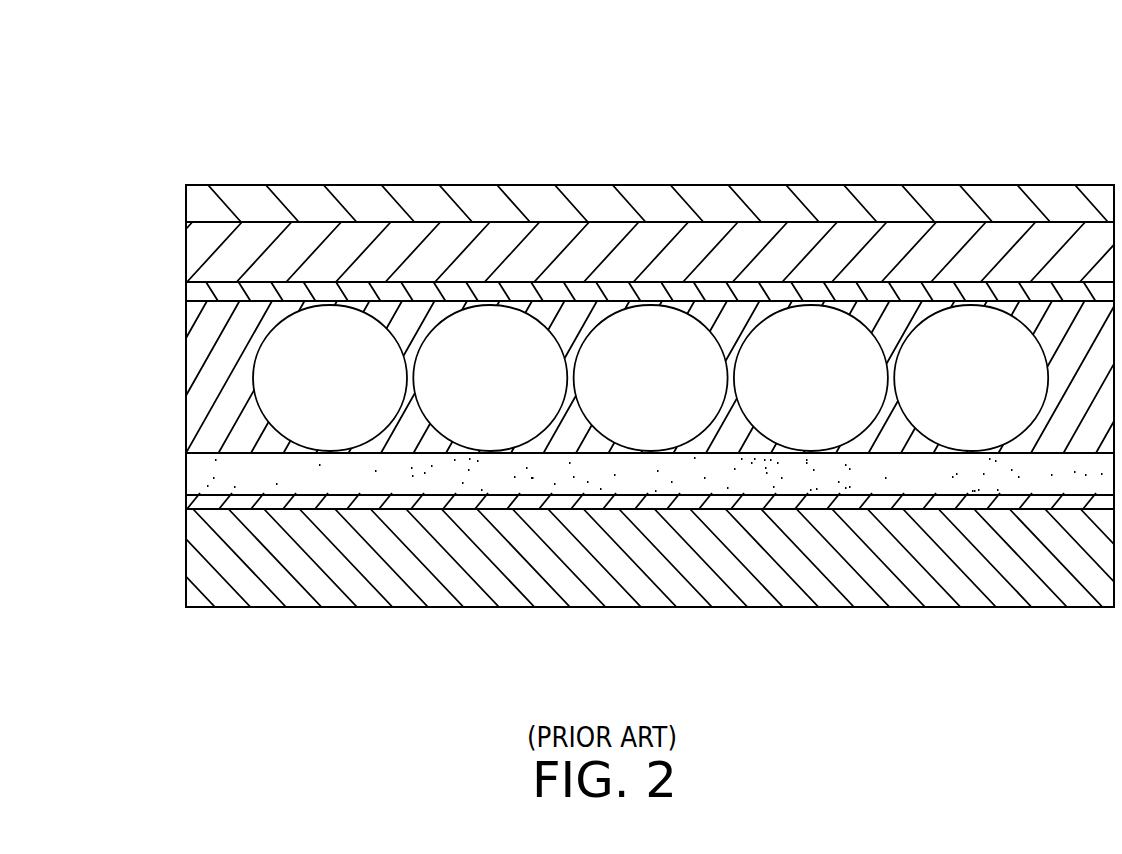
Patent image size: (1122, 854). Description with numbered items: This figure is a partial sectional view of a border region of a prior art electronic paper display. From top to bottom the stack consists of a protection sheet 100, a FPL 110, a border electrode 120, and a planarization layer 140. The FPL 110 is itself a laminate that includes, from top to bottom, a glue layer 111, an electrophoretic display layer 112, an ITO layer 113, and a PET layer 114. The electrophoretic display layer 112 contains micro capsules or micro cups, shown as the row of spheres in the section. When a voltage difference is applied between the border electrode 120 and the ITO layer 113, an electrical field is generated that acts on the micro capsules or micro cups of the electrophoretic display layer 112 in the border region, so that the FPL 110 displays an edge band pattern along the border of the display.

The protection sheet 100 is at (297, 187).
The FPL 110 is at (176, 222).
The glue layer 111 is at (621, 487).
The electrophoretic display layer 112 is at (975, 345).
The ITO layer 113 is at (475, 289).
The PET layer 114 is at (682, 252).
The border electrode 120 is at (919, 502).
The planarization layer 140 is at (363, 562).